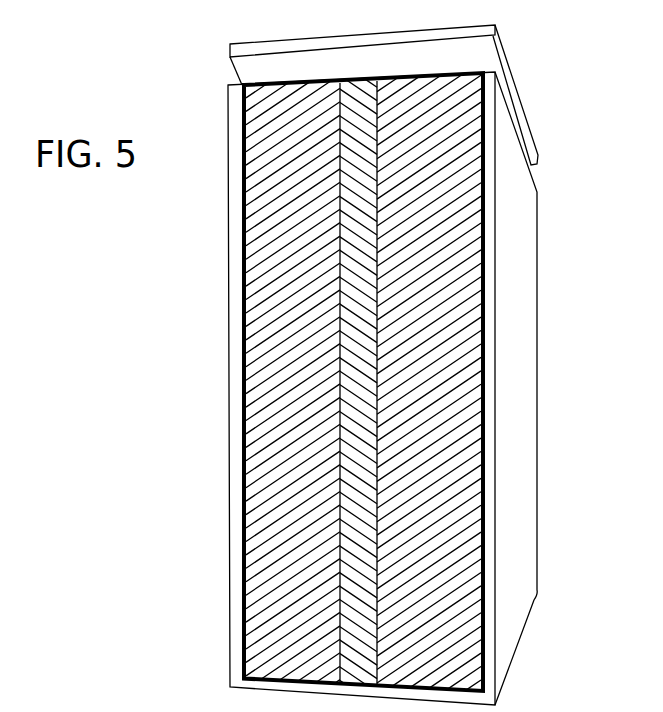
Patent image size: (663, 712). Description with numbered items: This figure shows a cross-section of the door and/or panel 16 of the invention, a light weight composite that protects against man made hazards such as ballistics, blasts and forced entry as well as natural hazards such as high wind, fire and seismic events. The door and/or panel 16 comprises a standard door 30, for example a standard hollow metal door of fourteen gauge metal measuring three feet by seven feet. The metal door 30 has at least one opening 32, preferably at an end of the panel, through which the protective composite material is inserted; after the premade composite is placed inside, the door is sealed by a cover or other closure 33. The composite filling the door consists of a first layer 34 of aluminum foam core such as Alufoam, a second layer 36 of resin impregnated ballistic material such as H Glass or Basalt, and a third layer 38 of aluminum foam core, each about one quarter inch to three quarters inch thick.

The door and/or panel 16 is at (567, 306).
The standard door 30 is at (236, 412).
The opening 32 is at (273, 75).
The cover or other closure 33 is at (476, 35).
The first layer 34 is at (262, 541).
The second layer 36 is at (360, 393).
The third layer 38 is at (450, 228).